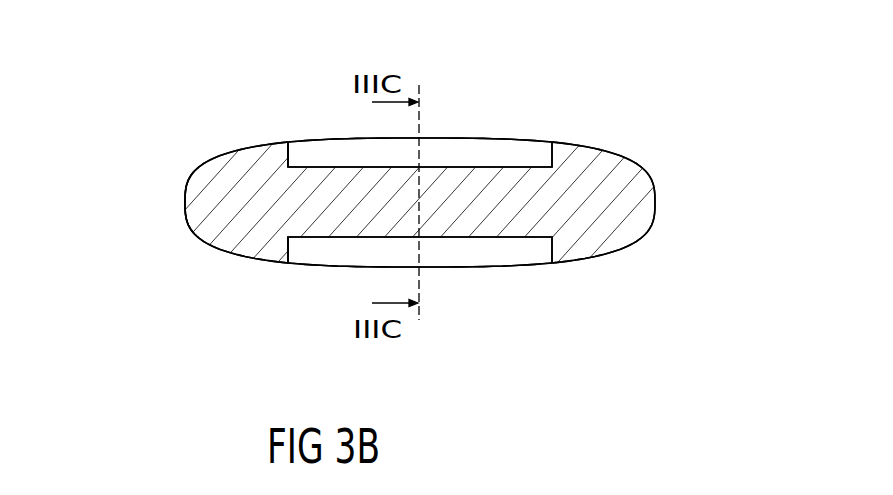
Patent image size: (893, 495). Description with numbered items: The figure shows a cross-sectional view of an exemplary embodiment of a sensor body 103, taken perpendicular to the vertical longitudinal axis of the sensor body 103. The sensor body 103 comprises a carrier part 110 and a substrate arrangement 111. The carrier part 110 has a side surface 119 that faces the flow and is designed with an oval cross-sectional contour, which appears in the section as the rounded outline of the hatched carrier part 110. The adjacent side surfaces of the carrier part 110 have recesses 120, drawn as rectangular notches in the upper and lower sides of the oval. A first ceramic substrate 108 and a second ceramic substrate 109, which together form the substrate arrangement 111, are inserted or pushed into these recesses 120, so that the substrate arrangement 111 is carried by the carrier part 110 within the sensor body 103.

The sensor body 103 is at (648, 239).
The carrier part 110 is at (618, 151).
The second ceramic substrate 109 is at (318, 140).
The first ceramic substrate 108 is at (520, 268).
The substrate arrangement 111 is at (420, 202).
The recesses 120 is at (516, 126).
The side surface 119 is at (184, 211).